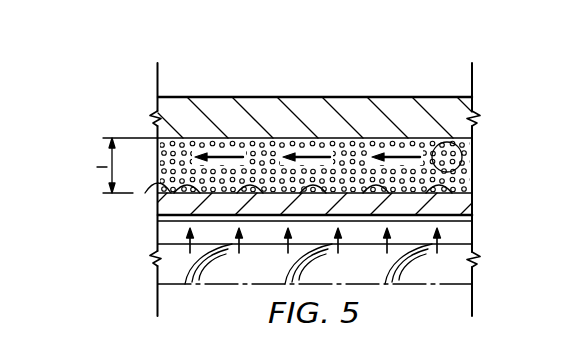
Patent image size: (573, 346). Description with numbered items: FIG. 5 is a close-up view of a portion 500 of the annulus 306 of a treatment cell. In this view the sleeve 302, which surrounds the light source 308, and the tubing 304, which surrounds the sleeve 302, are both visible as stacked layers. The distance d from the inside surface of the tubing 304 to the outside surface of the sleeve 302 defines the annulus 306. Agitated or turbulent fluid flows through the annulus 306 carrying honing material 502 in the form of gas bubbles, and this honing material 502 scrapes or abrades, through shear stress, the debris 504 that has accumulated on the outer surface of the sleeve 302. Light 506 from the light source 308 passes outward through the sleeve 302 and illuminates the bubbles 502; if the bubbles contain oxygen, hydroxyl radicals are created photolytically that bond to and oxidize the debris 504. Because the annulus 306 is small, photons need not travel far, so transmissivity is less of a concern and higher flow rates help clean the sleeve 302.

The portion 500 is at (278, 72).
The tubing 304 is at (348, 97).
The honing material 502 is at (438, 146).
The annulus 306 is at (75, 140).
The debris 504 is at (148, 189).
The light 506 is at (150, 234).
The sleeve 302 is at (448, 218).
The light source 308 is at (446, 284).